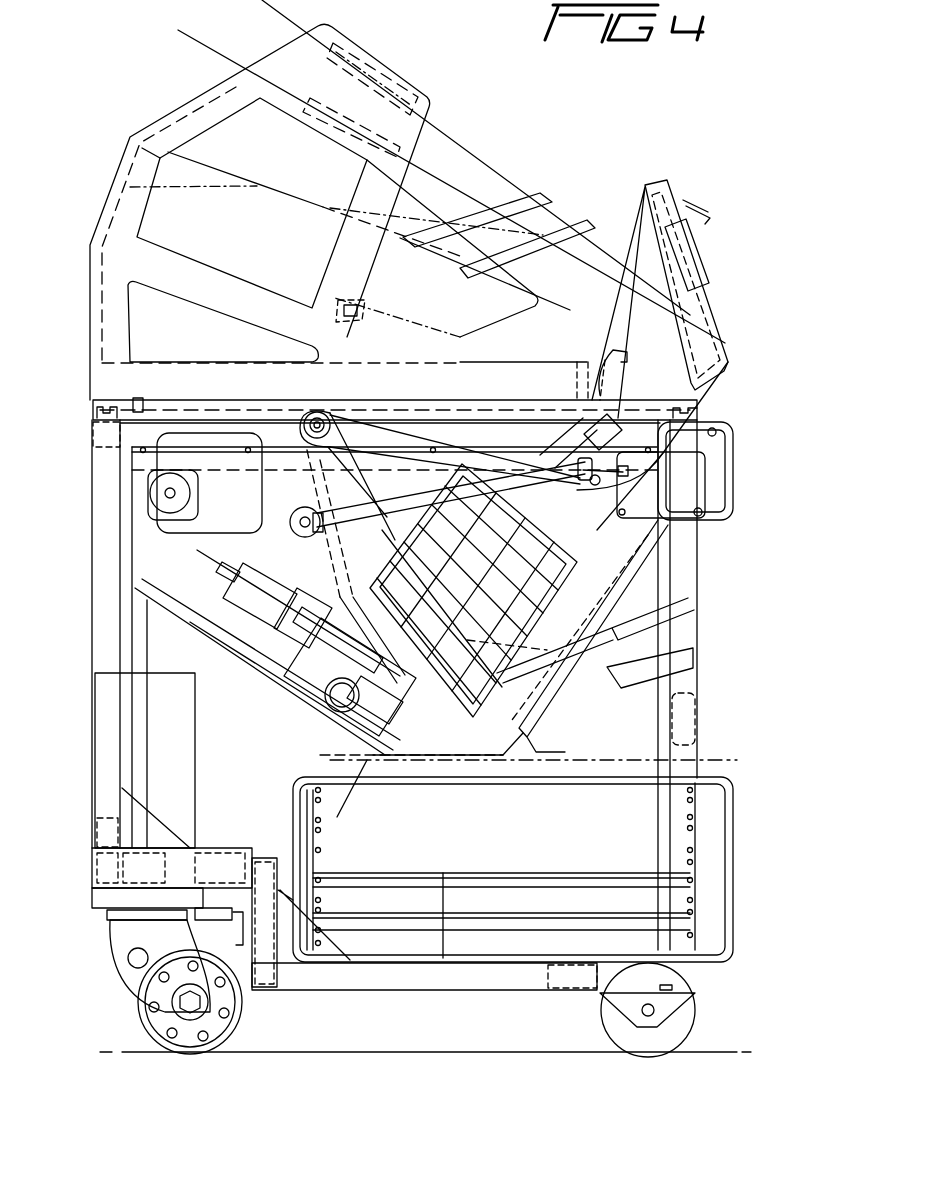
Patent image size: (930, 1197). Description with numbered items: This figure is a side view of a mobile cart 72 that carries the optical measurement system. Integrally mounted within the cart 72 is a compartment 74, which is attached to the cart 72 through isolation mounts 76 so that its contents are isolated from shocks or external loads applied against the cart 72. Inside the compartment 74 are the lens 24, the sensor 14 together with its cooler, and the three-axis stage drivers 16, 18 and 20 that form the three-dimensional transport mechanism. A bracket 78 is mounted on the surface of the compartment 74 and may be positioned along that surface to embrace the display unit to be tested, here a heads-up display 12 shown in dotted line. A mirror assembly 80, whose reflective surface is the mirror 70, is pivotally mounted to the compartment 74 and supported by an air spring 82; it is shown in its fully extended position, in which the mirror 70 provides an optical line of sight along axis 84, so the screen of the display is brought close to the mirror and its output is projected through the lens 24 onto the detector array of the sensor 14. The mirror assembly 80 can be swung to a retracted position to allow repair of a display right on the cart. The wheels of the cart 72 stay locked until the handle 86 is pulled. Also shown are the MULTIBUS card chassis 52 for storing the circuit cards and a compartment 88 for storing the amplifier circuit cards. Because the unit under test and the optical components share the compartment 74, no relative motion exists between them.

The heads-up display 12 is at (505, 320).
The sensor 14 is at (567, 547).
The three-axis stage driver 16 is at (290, 700).
The three-axis stage driver 18 is at (257, 607).
The three-axis stage driver 20 is at (567, 500).
The lens 24 is at (672, 453).
The MULTIBUS card chassis 52 is at (733, 835).
The mirror 70 is at (697, 300).
The cart 72 is at (90, 757).
The compartment 74 is at (190, 630).
The isolation mounts 76 is at (93, 408).
The bracket 78 is at (124, 163).
The mirror assembly 80 is at (712, 389).
The air spring 82 is at (347, 532).
The axis 84 is at (443, 182).
The handle 86 is at (735, 445).
The compartment 88 is at (194, 783).